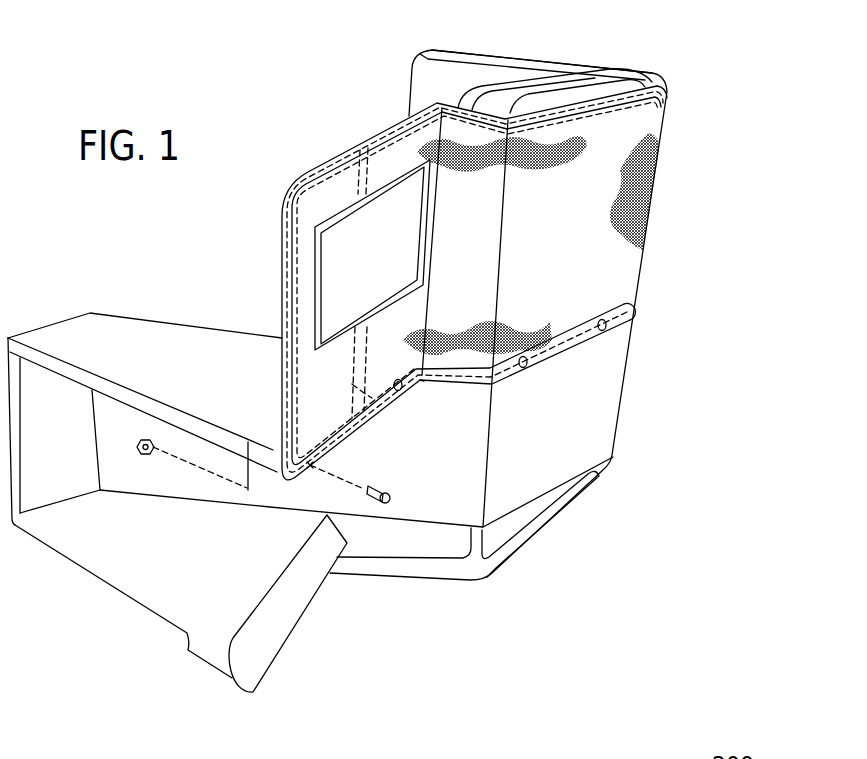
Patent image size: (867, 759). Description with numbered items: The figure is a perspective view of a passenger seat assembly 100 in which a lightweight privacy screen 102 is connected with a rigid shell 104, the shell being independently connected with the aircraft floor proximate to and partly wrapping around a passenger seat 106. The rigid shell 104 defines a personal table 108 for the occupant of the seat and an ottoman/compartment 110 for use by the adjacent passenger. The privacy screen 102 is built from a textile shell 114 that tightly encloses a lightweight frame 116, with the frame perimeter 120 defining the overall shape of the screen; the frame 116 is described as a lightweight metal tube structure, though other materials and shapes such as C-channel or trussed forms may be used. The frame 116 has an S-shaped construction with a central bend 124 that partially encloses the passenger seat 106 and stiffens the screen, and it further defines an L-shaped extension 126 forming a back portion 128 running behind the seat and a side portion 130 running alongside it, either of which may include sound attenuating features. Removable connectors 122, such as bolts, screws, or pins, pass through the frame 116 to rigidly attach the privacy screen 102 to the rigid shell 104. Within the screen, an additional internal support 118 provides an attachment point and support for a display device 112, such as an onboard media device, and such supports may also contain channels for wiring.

The passenger seat assembly 100 is at (375, 352).
The privacy screen 102 is at (512, 296).
The rigid shell 104 is at (648, 408).
The passenger seat 106 is at (457, 77).
The personal table 108 is at (212, 330).
The ottoman/compartment 110 is at (214, 557).
The display device 112 is at (386, 260).
The textile shell 114 is at (660, 151).
The frame 116 is at (630, 310).
The internal support 118 is at (366, 392).
The frame perimeter 120 is at (594, 79).
The removable connectors 122 is at (600, 322).
The central bend 124 is at (430, 392).
The L-shaped extension 126 is at (672, 70).
The back portion 128 is at (586, 206).
The side portion 130 is at (502, 64).